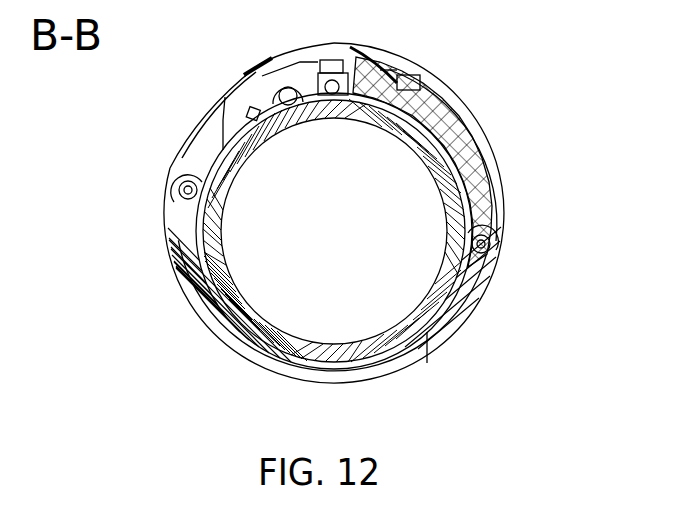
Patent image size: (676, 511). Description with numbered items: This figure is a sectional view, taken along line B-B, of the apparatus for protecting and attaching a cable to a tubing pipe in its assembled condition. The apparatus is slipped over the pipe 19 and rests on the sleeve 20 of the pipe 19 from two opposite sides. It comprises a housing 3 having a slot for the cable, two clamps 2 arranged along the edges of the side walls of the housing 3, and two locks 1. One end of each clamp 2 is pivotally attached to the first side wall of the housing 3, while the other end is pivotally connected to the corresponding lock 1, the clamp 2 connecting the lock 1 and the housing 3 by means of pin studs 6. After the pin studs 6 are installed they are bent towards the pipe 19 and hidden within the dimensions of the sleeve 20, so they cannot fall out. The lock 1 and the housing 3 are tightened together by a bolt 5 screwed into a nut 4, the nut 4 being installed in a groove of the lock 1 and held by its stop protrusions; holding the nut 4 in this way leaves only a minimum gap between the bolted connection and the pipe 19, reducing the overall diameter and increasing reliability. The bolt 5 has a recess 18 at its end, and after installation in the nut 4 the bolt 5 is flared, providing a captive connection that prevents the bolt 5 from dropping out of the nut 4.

The lock 1 is at (506, 221).
The clamp 2 is at (427, 363).
The housing 3 is at (256, 72).
The nut 4 is at (466, 108).
The bolt 5 is at (448, 78).
The pin stud 6 is at (183, 186).
The recess 18 is at (484, 179).
The pipe 19 is at (260, 367).
The sleeve 20 is at (200, 316).